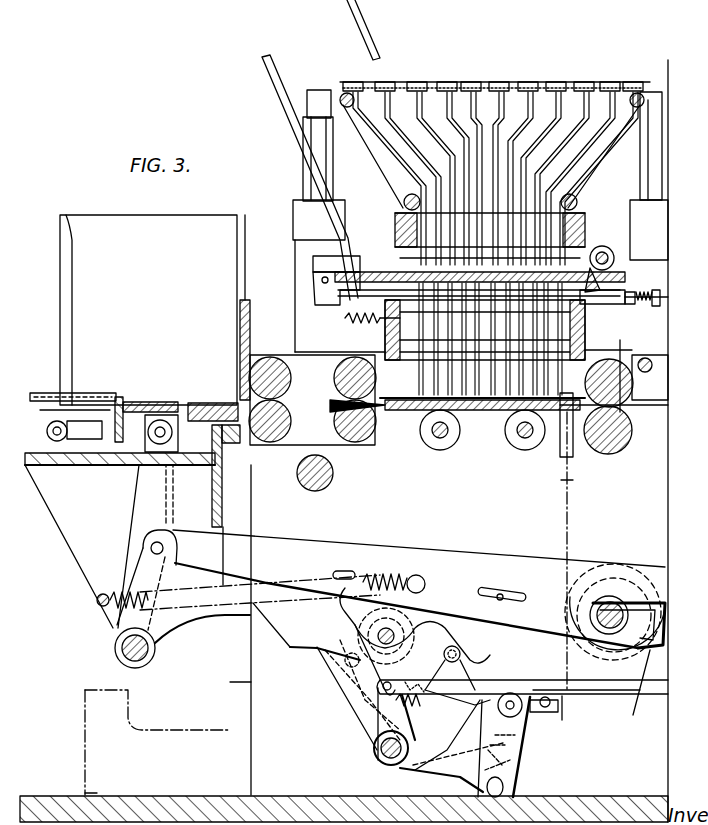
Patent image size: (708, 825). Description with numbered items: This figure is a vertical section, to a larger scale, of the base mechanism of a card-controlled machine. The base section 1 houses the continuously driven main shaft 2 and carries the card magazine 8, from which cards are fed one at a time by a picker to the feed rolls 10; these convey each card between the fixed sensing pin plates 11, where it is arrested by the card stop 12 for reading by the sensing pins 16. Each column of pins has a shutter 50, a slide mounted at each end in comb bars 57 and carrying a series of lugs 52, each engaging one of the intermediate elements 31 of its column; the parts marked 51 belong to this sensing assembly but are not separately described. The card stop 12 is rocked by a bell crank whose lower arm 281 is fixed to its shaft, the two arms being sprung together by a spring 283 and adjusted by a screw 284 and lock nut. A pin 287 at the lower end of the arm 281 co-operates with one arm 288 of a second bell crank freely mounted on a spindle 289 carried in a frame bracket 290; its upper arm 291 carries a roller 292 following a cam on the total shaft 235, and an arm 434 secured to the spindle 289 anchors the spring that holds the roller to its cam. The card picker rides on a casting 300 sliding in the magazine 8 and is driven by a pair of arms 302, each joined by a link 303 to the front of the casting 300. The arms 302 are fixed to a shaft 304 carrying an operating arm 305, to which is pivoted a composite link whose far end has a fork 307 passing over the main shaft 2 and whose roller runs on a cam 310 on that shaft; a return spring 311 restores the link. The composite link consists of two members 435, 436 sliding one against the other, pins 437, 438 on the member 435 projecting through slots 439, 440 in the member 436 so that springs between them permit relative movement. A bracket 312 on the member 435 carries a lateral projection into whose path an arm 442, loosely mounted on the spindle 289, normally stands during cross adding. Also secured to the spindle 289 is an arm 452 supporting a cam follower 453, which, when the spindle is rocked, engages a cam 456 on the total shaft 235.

The base section 1 is at (251, 712).
The main shaft 2 is at (613, 608).
The card magazine 8 is at (148, 310).
The feed rolls 10 is at (338, 412).
The sensing pin plates 11 is at (420, 415).
The card stop 12 is at (570, 465).
The sensing pin 16 is at (500, 395).
The intermediate elements 31 is at (398, 322).
The shutter 50 is at (592, 275).
The stylus lever 51 is at (385, 285).
The lugs 52 is at (420, 280).
The comb bars 57 is at (656, 305).
The total shaft 235 is at (395, 628).
The lower arm 281 is at (516, 773).
The spring 283 is at (518, 748).
The screw 284 is at (432, 775).
The pin 287 is at (505, 790).
The arm 288 is at (441, 785).
The spindle 289 is at (380, 758).
The frame bracket 290 is at (80, 730).
The upper arm 291 is at (330, 690).
The roller 292 is at (330, 662).
The casting 300 is at (172, 408).
The arms 302 is at (140, 530).
The link 303 is at (90, 440).
The shaft 304 is at (118, 652).
The operating arm 305 is at (145, 572).
The hub 307 is at (597, 605).
The cam 310 is at (634, 691).
The return spring 311 is at (120, 603).
The bracket 312 is at (280, 625).
The arm 434 is at (413, 708).
The link member 435 is at (255, 553).
The link member 436 is at (510, 570).
The pin 437 is at (362, 580).
The pin 438 is at (508, 595).
The slot 439 is at (335, 573).
The slot 440 is at (466, 615).
The arm 442 is at (345, 706).
The arm 452 is at (460, 680).
The cam follower 453 is at (462, 658).
The cam 456 is at (478, 611).